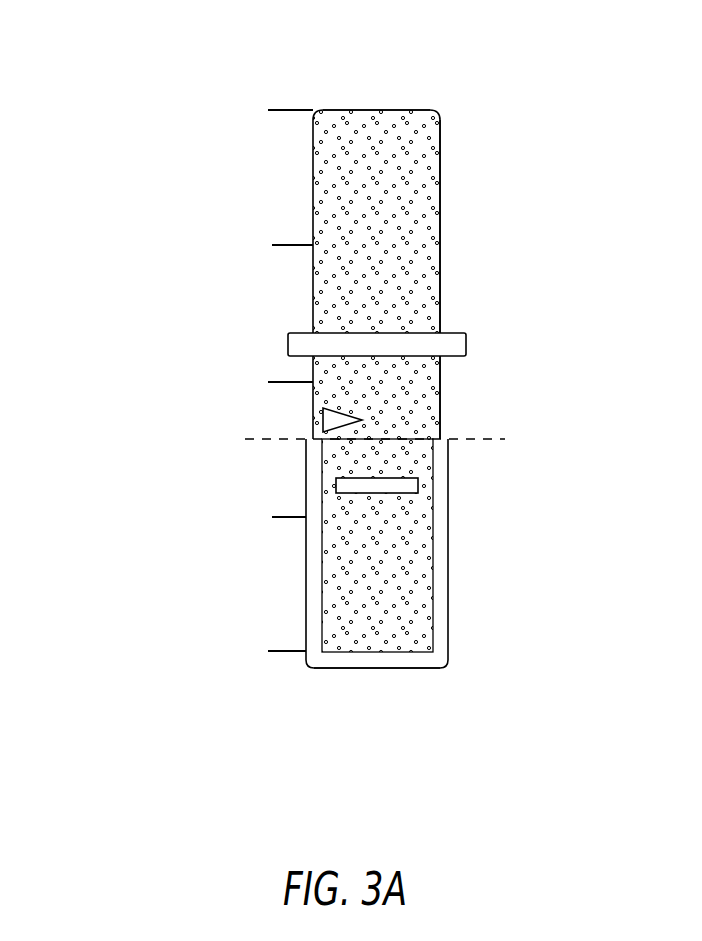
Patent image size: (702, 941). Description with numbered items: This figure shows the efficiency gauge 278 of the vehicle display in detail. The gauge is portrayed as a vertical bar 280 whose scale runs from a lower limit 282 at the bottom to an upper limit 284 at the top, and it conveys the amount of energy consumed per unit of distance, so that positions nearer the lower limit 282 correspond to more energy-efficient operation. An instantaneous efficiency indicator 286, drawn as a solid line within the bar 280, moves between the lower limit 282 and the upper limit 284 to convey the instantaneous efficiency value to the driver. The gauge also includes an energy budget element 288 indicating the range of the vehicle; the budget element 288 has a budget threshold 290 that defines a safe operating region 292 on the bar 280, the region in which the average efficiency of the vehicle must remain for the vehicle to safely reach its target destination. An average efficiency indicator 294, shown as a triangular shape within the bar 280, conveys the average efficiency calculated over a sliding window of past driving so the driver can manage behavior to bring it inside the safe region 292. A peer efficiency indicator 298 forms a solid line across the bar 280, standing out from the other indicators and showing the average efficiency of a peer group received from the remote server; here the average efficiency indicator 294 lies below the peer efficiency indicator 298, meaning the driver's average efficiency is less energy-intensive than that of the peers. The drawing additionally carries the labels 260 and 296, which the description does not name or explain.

The scale with numeric indicia 260 is at (288, 90).
The efficiency gauge 278 is at (477, 88).
The bar 280 is at (440, 200).
The lower limit 282 is at (372, 655).
The upper limit 284 is at (393, 110).
The instantaneous efficiency indicator 286 is at (418, 485).
The energy budget element 288 is at (306, 551).
The budget threshold 290 is at (473, 440).
The safe operating region 292 is at (388, 583).
The average efficiency indicator 294 is at (323, 420).
The lower region 296 is at (174, 522).
The peer efficiency indicator 298 is at (466, 345).